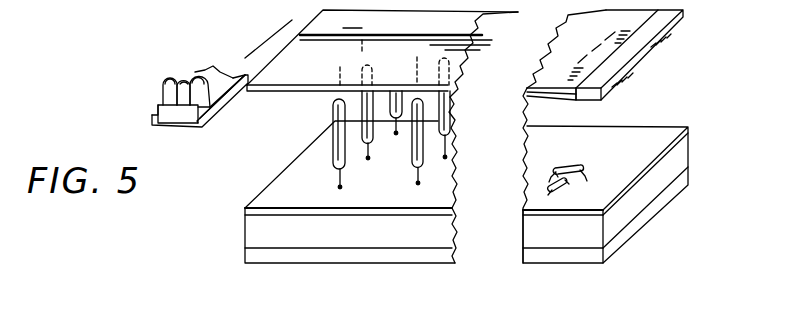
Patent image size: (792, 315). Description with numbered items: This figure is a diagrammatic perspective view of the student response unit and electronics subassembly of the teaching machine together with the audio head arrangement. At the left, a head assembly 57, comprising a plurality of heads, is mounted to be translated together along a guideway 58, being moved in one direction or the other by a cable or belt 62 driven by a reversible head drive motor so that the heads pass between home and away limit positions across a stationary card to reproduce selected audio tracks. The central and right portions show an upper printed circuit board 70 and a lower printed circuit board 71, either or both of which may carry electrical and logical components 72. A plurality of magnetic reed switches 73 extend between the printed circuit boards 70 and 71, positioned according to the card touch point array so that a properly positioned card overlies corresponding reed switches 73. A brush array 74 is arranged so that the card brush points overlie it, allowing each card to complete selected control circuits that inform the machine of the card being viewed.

The head assembly 57 is at (150, 115).
The guideway 58 is at (230, 103).
The cable or belt 62 is at (176, 115).
The upper printed circuit board 70 is at (290, 88).
The lower printed circuit board 71 is at (641, 140).
The electrical and logical components 72 is at (567, 162).
The magnetic reed switches 73 is at (410, 137).
The brush array 74 is at (676, 24).